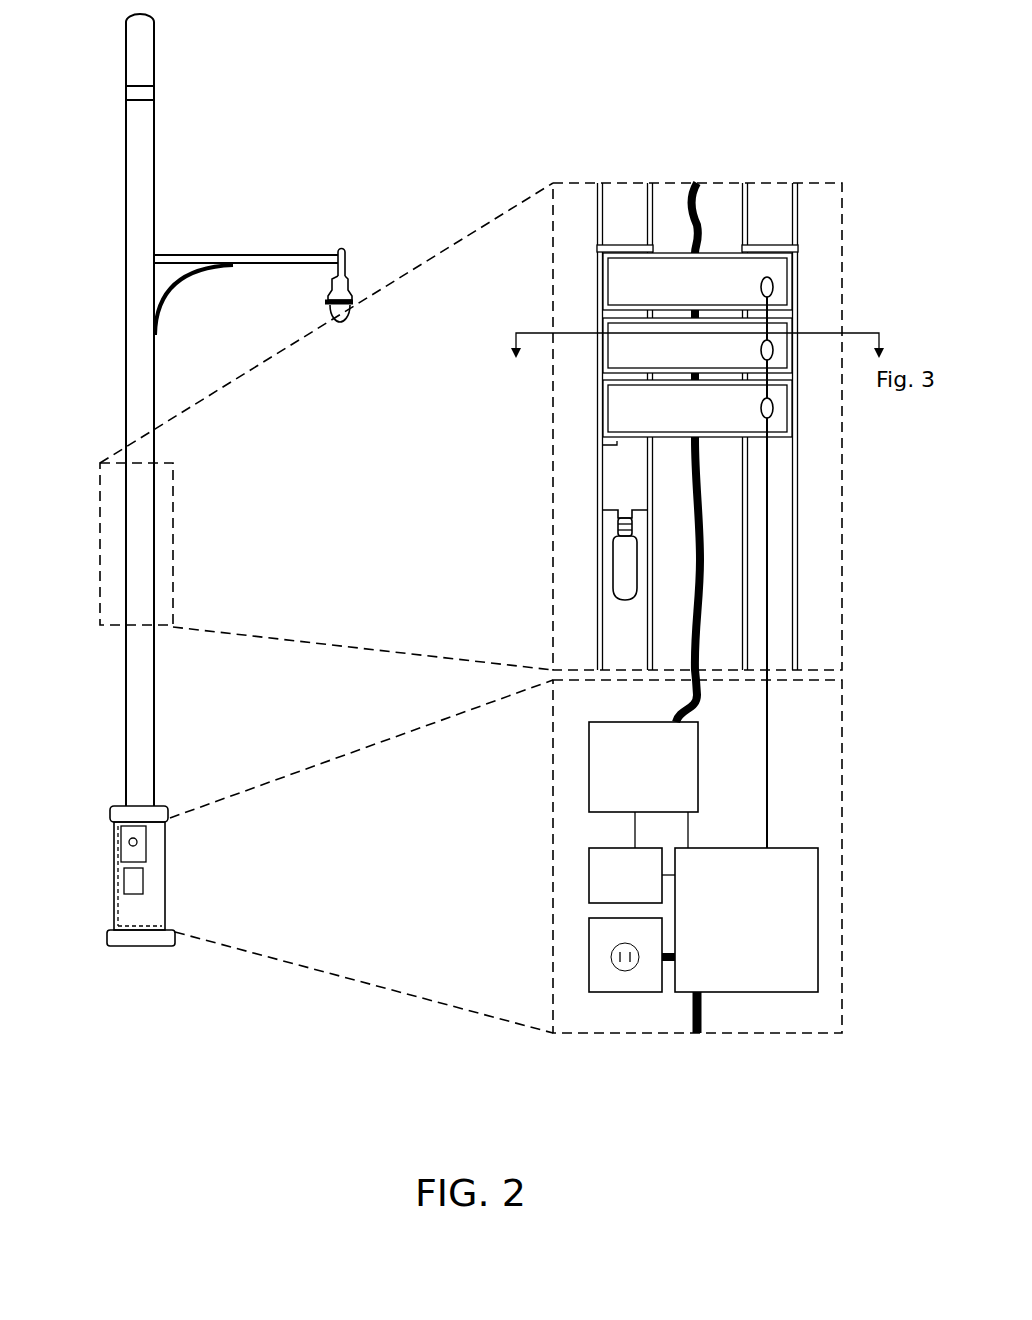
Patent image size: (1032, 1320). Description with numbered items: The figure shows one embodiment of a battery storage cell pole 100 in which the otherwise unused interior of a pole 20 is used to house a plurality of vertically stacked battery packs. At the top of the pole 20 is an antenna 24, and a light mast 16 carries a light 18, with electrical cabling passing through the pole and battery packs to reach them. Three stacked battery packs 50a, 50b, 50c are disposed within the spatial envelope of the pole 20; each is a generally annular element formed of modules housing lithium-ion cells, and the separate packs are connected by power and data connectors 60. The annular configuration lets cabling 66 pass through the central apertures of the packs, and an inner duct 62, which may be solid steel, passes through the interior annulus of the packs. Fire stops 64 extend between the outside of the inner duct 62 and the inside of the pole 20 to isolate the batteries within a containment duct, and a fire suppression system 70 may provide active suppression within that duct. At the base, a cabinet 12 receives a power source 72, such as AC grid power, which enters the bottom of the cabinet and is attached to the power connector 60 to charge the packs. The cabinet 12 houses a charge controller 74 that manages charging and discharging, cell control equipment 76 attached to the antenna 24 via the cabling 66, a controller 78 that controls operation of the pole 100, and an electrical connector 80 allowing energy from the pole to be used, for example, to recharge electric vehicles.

The battery storage cell pole 100 is at (86, 728).
The cabinet 12 is at (166, 884).
The light mast 16 is at (272, 255).
The light 18 is at (352, 285).
The pole 20 is at (148, 215).
The antenna 24 is at (143, 52).
The battery pack 50a is at (697, 281).
The battery pack 50b is at (697, 345).
The battery pack 50c is at (697, 408).
The power and data connectors 60 is at (768, 458).
The inner duct 62 is at (748, 583).
The fire stops 64 is at (612, 247).
The cabling 66 is at (700, 528).
The fire suppression system 70 is at (613, 568).
The power source 72 is at (713, 1025).
The charge controller 74 is at (746, 920).
The cell control equipment 76 is at (643, 767).
The controller 78 is at (625, 875).
The electrical connector 80 is at (589, 947).